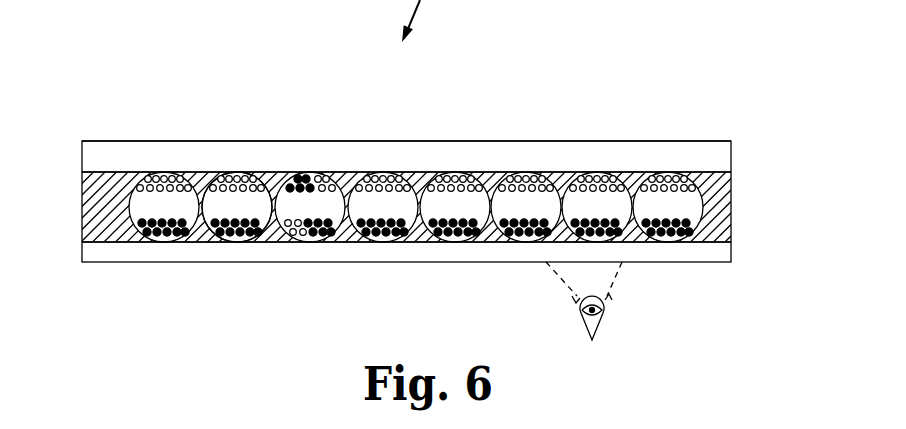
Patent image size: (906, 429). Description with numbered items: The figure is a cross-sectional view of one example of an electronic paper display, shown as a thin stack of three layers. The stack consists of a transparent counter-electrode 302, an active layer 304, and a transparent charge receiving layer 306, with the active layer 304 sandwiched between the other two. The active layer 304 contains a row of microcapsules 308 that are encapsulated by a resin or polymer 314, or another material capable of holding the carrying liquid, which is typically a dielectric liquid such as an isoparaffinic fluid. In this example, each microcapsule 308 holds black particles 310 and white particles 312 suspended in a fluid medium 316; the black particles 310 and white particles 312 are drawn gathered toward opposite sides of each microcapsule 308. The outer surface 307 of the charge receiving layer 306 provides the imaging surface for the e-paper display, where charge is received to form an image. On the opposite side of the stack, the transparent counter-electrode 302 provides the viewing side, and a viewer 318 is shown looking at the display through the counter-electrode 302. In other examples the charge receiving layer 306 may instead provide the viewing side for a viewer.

The transparent counter-electrode 302 is at (727, 254).
The active layer 304 is at (750, 172).
The transparent charge receiving layer 306 is at (727, 161).
The surface 307 is at (455, 140).
The microcapsules 308 is at (218, 173).
The black particles 310 is at (147, 243).
The white particles 312 is at (139, 178).
The resin or polymer 314 is at (87, 210).
The fluid medium 316 is at (263, 200).
The viewer 318 is at (597, 326).